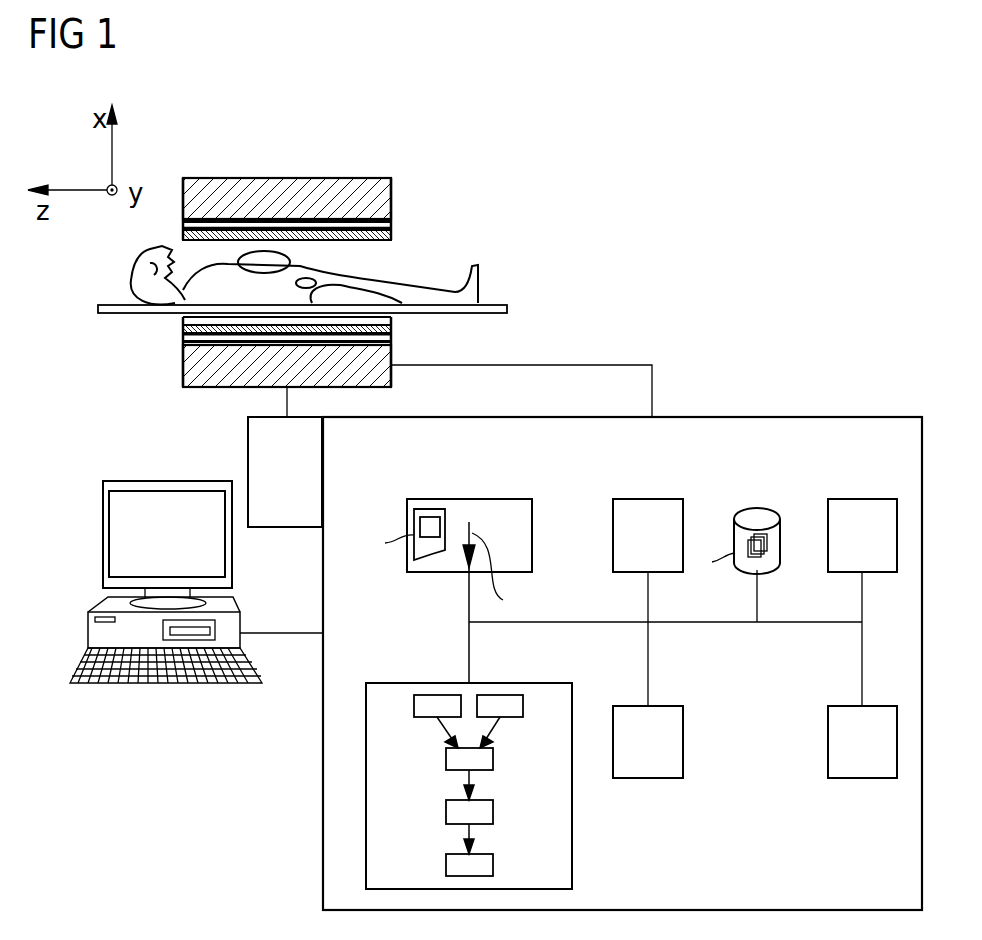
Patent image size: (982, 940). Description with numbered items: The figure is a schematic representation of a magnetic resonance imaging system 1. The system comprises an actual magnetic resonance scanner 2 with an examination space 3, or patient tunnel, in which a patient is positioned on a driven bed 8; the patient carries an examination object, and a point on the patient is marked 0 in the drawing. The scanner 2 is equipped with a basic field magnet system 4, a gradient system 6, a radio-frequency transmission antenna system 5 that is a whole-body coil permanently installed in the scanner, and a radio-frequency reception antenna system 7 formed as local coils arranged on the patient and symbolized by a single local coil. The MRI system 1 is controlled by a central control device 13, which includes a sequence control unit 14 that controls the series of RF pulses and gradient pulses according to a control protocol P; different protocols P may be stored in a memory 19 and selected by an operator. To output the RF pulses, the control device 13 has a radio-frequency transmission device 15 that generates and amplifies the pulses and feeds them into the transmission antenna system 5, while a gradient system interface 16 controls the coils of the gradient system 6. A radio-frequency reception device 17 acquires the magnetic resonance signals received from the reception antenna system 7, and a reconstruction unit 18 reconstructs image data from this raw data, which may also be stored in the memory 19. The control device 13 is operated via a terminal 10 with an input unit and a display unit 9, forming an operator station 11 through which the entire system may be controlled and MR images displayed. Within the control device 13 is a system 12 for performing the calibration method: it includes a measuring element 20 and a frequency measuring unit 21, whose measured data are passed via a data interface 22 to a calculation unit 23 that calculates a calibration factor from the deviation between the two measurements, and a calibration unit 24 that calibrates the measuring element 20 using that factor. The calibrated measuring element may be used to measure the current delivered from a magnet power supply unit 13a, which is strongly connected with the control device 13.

The marker / point of interest on patient 0 is at (306, 278).
The magnetic resonance imaging system 1 is at (794, 143).
The magnetic resonance scanner 2 is at (334, 155).
The examination space 3 is at (372, 256).
The basic field magnet system 4 is at (389, 191).
The radio-frequency transmission antenna system 5 is at (183, 228).
The gradient system 6 is at (392, 229).
The radio-frequency reception antenna system 7 is at (264, 262).
The driven bed 8 is at (507, 310).
The display unit 9 is at (142, 481).
The terminal 10 is at (166, 683).
The operator computer / user interface 11 is at (79, 529).
The system 12 is at (572, 842).
The central control device 13 is at (796, 418).
The magnet power supply unit 13a is at (258, 458).
The sequence control unit 14 is at (472, 498).
The radio-frequency transmission device 15 is at (648, 498).
The gradient system interface 16 is at (683, 733).
The radio-frequency reception device 17 is at (862, 498).
The reconstruction unit 18 is at (828, 752).
The memory 19 is at (757, 507).
The measuring element 20 is at (500, 694).
The frequency measuring unit 21 is at (423, 718).
The data interface 22 is at (493, 760).
The calculation unit 23 is at (493, 812).
The calibration unit 24 is at (493, 866).